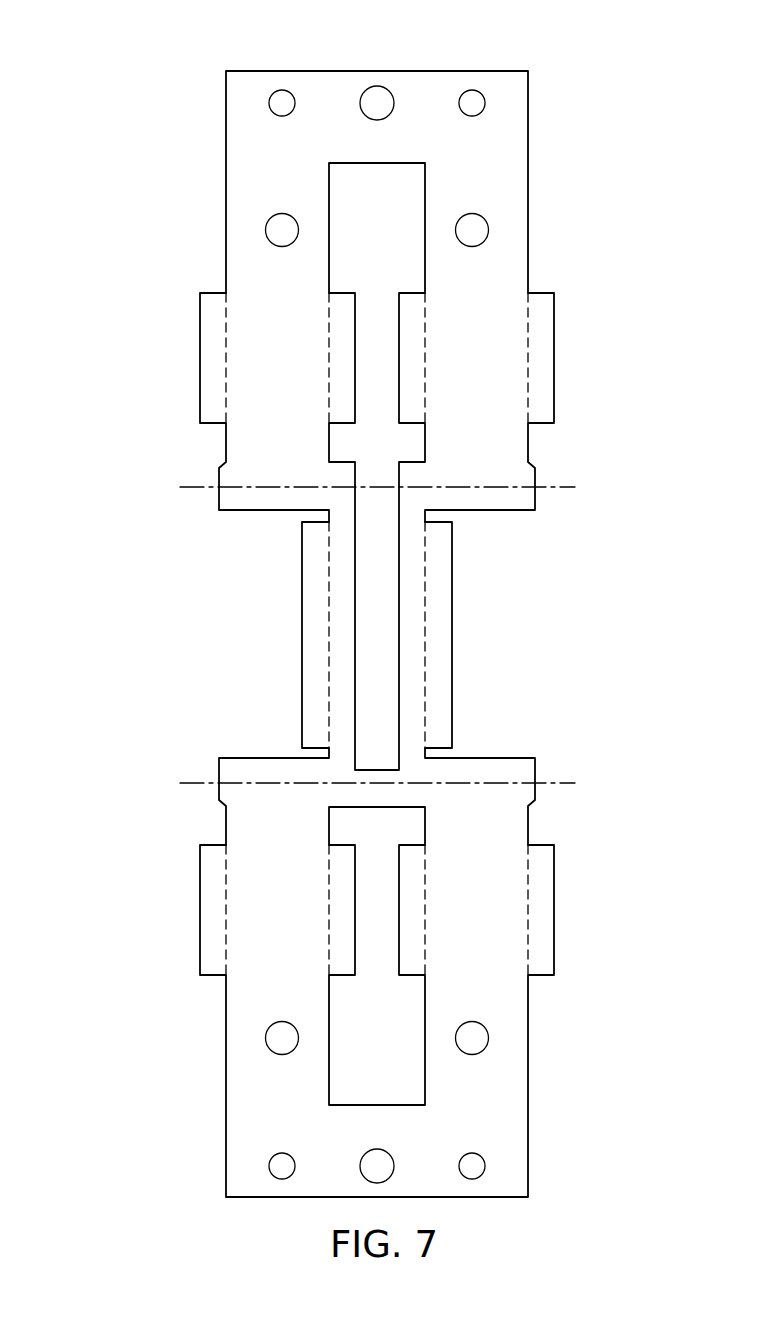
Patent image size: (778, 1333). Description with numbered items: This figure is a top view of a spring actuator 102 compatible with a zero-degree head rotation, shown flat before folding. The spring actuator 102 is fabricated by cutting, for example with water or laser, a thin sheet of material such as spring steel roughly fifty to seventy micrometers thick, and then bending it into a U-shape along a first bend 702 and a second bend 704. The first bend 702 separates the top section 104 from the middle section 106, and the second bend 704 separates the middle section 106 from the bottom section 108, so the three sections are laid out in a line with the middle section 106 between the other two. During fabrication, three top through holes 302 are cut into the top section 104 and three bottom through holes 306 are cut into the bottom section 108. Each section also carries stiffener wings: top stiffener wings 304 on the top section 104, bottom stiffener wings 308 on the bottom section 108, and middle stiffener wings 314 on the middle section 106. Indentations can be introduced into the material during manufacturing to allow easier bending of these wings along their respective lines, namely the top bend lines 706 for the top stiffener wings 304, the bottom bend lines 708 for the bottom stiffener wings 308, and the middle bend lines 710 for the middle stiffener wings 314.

The spring actuator 102 is at (177, 42).
The top section 104 is at (508, 142).
The middle section 106 is at (514, 505).
The bottom section 108 is at (500, 1102).
The top through holes 302 is at (365, 116).
The top stiffener wings 304 is at (412, 318).
The bottom through holes 306 is at (489, 1039).
The bottom stiffener wings 308 is at (412, 878).
The middle stiffener wings 314 is at (317, 570).
The first bend 702 is at (564, 487).
The second bend 704 is at (552, 783).
The top bend lines 706 is at (328, 390).
The bottom bend lines 708 is at (328, 940).
The middle bend lines 710 is at (327, 668).